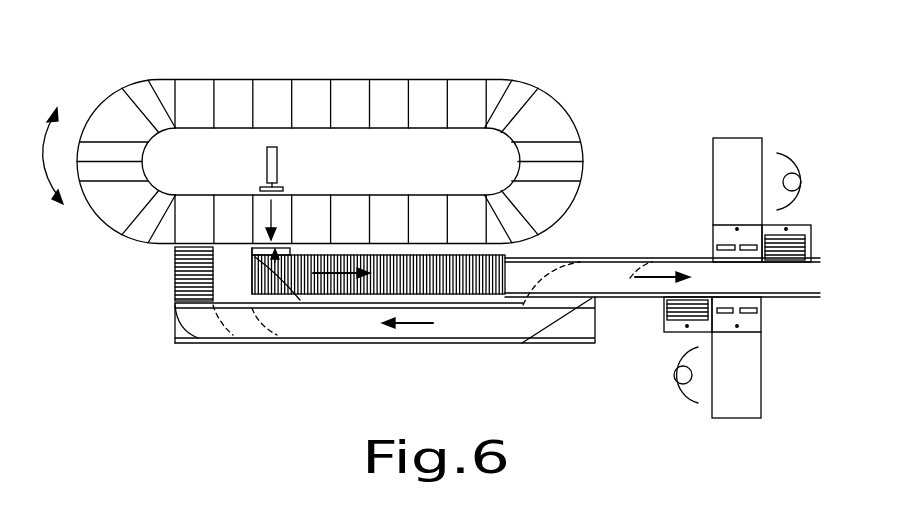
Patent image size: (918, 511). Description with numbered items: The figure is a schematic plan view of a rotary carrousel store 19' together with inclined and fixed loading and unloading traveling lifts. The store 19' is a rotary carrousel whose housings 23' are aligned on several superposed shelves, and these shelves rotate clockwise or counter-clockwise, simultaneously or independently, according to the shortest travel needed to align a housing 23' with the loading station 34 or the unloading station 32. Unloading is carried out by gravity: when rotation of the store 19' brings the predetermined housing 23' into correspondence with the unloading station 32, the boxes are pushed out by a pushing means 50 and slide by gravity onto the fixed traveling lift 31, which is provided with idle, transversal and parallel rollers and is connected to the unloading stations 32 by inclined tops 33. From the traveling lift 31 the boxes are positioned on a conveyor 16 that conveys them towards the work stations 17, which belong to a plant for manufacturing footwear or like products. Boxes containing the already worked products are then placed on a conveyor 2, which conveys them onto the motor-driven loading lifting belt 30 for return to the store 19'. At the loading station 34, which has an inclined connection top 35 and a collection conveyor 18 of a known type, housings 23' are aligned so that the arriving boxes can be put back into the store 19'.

The conveyor 2 is at (548, 303).
The conveyor 16 is at (615, 278).
The work station 17 is at (727, 162).
The collection conveyor 18 is at (188, 332).
The store 19' is at (313, 126).
The housing 23' is at (330, 129).
The lifting belt 30 is at (383, 333).
The fixed traveling lift 31 is at (440, 280).
The unloading station 32 is at (300, 300).
The inclined top 33 is at (250, 257).
The loading station 34 is at (176, 254).
The inclined connection top 35 is at (181, 288).
The pushing means 50 is at (265, 165).